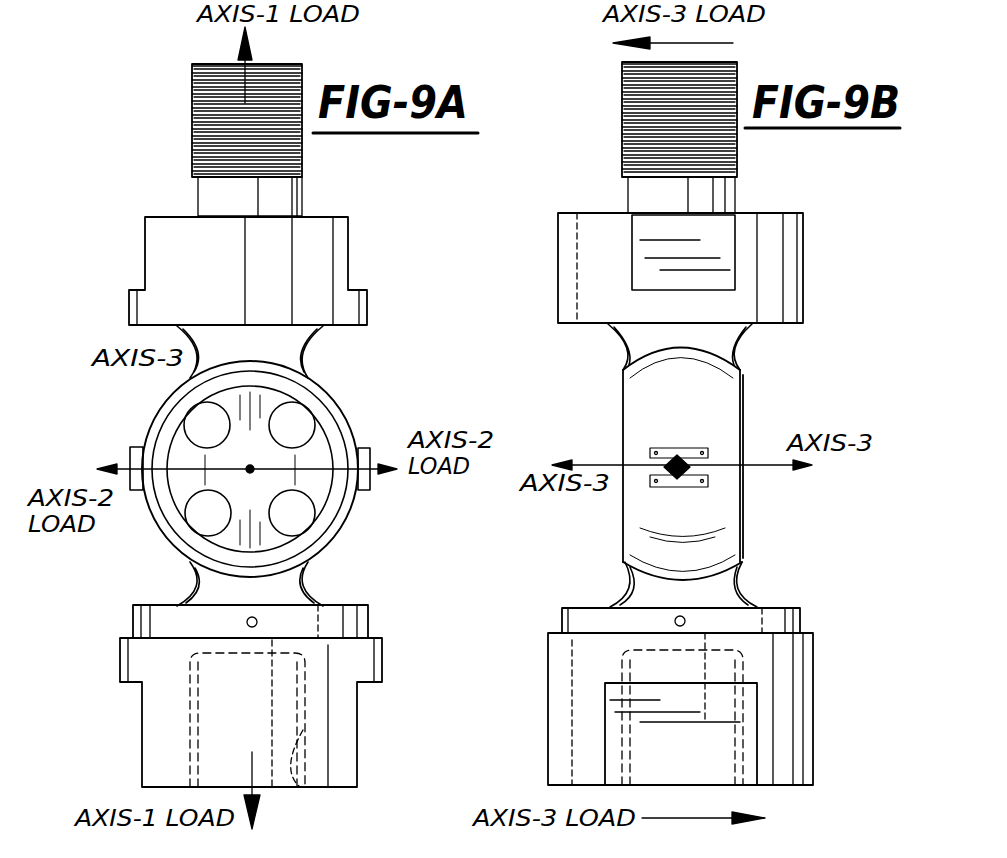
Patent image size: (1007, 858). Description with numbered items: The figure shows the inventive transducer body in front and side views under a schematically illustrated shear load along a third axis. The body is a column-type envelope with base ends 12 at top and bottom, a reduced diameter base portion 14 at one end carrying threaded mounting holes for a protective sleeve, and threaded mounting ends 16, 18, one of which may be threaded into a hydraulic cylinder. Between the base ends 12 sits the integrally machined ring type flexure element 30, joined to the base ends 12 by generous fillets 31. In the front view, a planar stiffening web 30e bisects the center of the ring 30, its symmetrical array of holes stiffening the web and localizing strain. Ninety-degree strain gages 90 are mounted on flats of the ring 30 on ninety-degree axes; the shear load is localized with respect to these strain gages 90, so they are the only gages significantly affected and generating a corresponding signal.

In FIG. 9A, the base ends 12 is at (325, 248).
In FIG. 9B, the base ends 12 is at (775, 253).
In FIG. 9A, the reduced diameter base portion 14 is at (370, 621).
In FIG. 9B, the reduced diameter base portion 14 is at (790, 618).
In FIG. 9A, the threaded mounting end 16 is at (300, 790).
In FIG. 9B, the threaded mounting end 16 is at (730, 775).
In FIG. 9A, the threaded mounting end 18 is at (200, 113).
In FIG. 9B, the threaded mounting end 18 is at (635, 107).
In FIG. 9B, the ring type flexure element 30 is at (595, 507).
In FIG. 9A, the stiffening web 30e is at (315, 438).
In FIG. 9A, the fillets 31 is at (273, 342).
In FIG. 9B, the fillets 31 is at (710, 345).
In FIG. 9A, the 90° strain gages 90 is at (130, 456).
In FIG. 9B, the 90° strain gages 90 is at (665, 460).